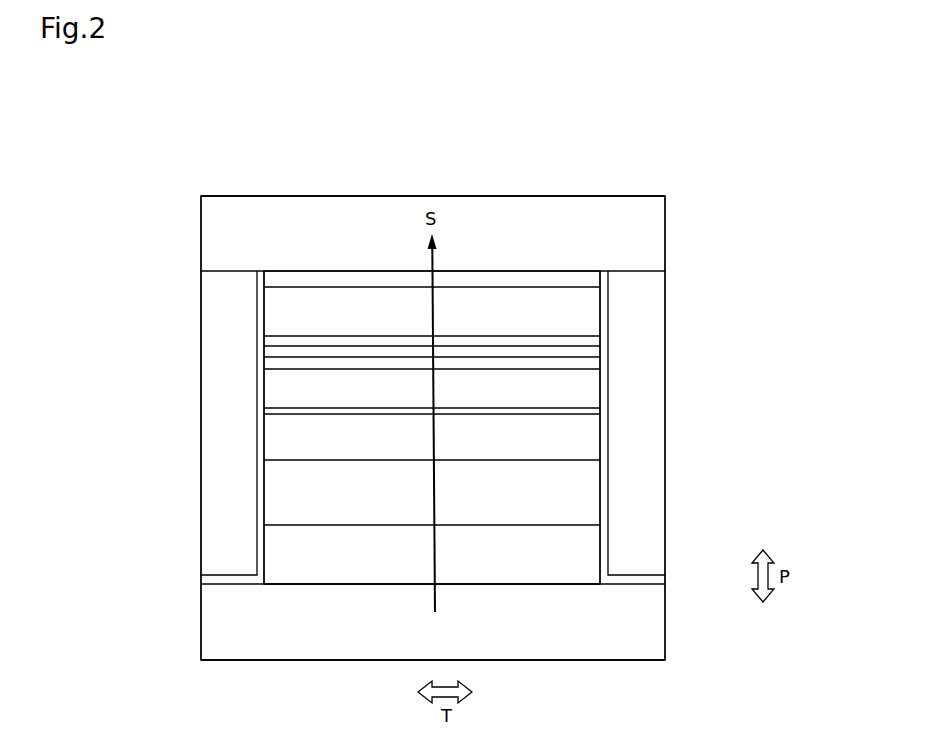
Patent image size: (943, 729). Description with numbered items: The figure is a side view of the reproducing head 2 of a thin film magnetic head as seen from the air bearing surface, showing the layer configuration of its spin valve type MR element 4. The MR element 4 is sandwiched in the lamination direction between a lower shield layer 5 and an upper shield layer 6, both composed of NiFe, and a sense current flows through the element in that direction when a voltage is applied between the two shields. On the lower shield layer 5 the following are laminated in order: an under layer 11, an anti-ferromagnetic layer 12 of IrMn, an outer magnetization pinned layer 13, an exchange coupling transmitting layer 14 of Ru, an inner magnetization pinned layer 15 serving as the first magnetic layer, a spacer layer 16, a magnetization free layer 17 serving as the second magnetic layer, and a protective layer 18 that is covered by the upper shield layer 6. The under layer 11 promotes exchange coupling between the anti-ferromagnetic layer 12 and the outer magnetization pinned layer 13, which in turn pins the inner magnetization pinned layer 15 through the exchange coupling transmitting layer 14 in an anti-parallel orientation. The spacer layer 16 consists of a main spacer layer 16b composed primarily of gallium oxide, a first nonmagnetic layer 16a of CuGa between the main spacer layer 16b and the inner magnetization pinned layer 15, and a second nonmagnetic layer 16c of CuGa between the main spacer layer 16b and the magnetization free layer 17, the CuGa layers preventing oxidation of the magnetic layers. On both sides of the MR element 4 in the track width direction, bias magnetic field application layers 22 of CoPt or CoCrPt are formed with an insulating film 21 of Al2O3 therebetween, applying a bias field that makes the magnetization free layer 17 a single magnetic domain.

The reproducing head 2 is at (447, 168).
The spin valve type MR element 4 is at (780, 270).
The lower shield layer 5 is at (652, 611).
The upper shield layer 6 is at (645, 240).
The under layer 11 is at (594, 553).
The anti-ferromagnetic layer 12 is at (594, 494).
The outer magnetization pinned layer 13 is at (594, 438).
The exchange coupling transmitting layer 14 is at (594, 410).
The inner magnetization pinned layer 15 is at (594, 391).
The spacer layer 16 is at (525, 347).
The first nonmagnetic layer 16a is at (594, 366).
The main spacer layer 16b is at (594, 352).
The second nonmagnetic layer 16c is at (594, 335).
The magnetization free layer 17 is at (594, 315).
The protective layer 18 is at (600, 277).
The insulating film 21 is at (204, 577).
The bias magnetic field application layers 22 is at (204, 469).